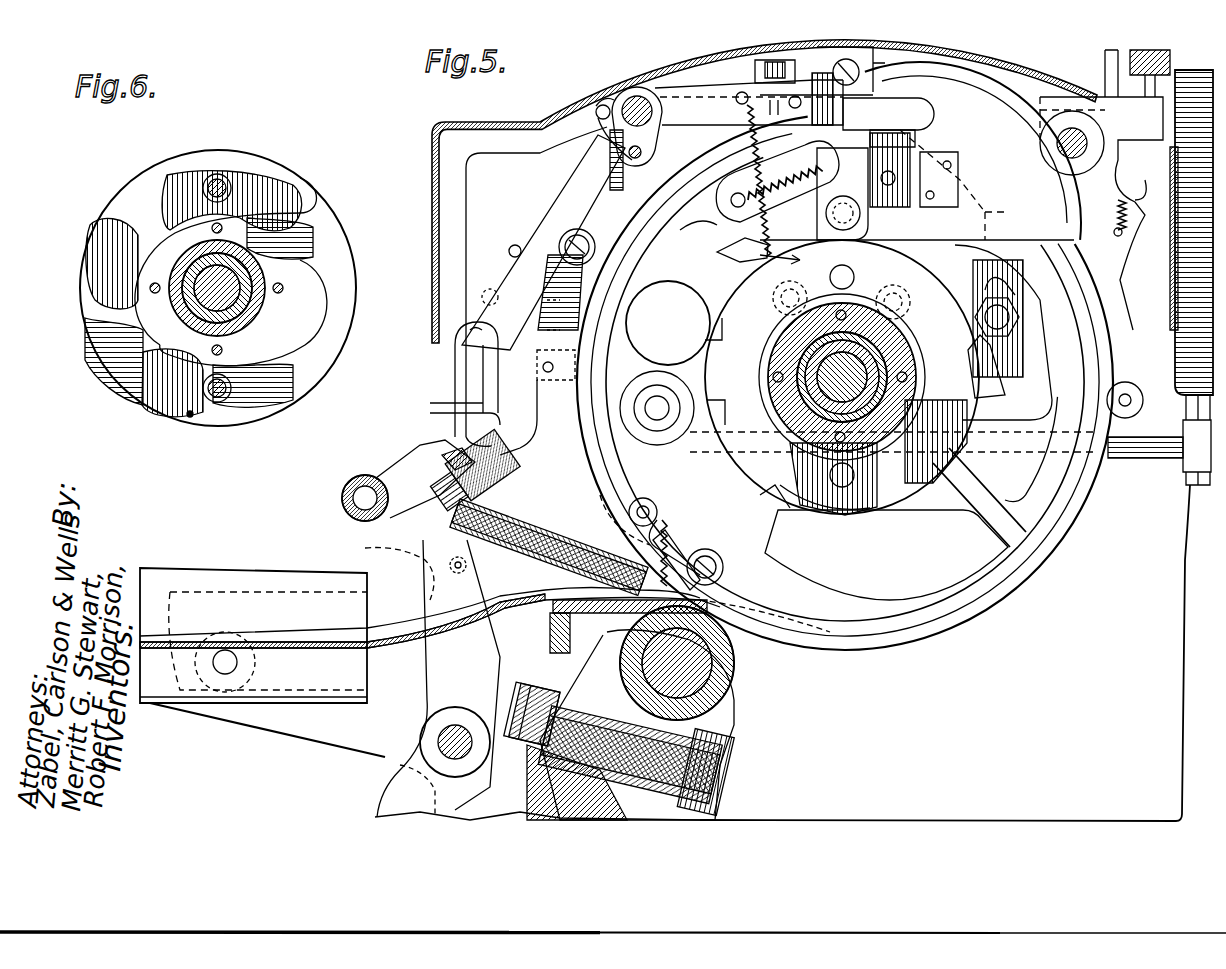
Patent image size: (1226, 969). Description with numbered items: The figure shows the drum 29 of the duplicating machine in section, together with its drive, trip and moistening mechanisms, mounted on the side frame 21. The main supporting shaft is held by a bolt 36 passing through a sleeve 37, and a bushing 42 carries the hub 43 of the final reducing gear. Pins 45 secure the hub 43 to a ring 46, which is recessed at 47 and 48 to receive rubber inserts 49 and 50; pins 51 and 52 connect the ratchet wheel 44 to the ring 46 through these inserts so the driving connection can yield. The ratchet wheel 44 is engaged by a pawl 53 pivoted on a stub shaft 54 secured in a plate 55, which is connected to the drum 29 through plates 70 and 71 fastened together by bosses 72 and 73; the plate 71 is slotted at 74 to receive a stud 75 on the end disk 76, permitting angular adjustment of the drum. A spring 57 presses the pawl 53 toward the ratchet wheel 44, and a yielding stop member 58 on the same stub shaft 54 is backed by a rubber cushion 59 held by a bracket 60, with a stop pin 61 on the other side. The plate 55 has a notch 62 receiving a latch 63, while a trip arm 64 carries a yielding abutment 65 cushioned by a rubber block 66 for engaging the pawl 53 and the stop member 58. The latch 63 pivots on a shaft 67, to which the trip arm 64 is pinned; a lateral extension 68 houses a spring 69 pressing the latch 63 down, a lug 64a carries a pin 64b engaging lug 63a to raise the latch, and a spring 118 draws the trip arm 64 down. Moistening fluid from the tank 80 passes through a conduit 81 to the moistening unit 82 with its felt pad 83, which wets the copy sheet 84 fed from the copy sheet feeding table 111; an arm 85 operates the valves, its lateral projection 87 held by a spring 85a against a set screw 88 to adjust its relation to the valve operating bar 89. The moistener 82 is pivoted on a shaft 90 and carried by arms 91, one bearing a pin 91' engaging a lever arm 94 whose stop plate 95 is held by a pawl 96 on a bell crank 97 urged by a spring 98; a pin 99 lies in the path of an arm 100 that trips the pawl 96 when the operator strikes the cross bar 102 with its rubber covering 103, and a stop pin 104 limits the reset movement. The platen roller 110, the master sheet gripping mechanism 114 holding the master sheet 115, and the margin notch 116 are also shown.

In FIG. 5, the side frame 21 is at (455, 168).
In FIG. 5, the drum 29 is at (987, 612).
In FIG. 6, the bolt 36 is at (182, 300).
In FIG. 5, the bolt 36 is at (772, 370).
In FIG. 6, the sleeve 37 is at (200, 262).
In FIG. 5, the sleeve 37 is at (815, 430).
In FIG. 6, the bushing 42 is at (258, 276).
In FIG. 5, the bushing 42 is at (790, 398).
In FIG. 5, the hub 43 is at (768, 350).
In FIG. 5, the ratchet wheel 44 is at (840, 490).
In FIG. 6, the pins 45 is at (222, 350).
In FIG. 5, the pins 45 is at (774, 381).
In FIG. 6, the ring 46 is at (127, 370).
In FIG. 6, the recess 47 is at (150, 196).
In FIG. 6, the recess 48 is at (190, 418).
In FIG. 6, the rubber insert 49 is at (273, 393).
In FIG. 6, the rubber insert 50 is at (278, 200).
In FIG. 6, the pin 51 is at (233, 388).
In FIG. 5, the pin 51 is at (862, 512).
In FIG. 6, the pin 52 is at (233, 188).
In FIG. 5, the pin 52 is at (853, 277).
In FIG. 5, the pawl 53 is at (720, 250).
In FIG. 5, the stub shaft 54 is at (860, 217).
In FIG. 5, the plate 55 is at (1012, 178).
In FIG. 5, the spring 57 is at (806, 190).
In FIG. 5, the yielding stop member 58 is at (820, 164).
In FIG. 5, the rubber cushion 59 is at (902, 208).
In FIG. 5, the bracket 60 is at (946, 186).
In FIG. 5, the stop pin 61 is at (812, 178).
In FIG. 5, the notch 62 is at (915, 112).
In FIG. 5, the latch 63 is at (893, 113).
In FIG. 5, the lug 63a is at (616, 135).
In FIG. 5, the trip arm 64 is at (668, 82).
In FIG. 5, the lug 64a is at (600, 127).
In FIG. 5, the pin 64b is at (596, 110).
In FIG. 5, the yielding abutment 65 is at (878, 94).
In FIG. 5, the rubber block 66 is at (886, 77).
In FIG. 5, the shaft 67 is at (623, 105).
In FIG. 5, the lateral extension 68 is at (765, 72).
In FIG. 5, the spring 69 is at (770, 60).
In FIG. 5, the plate 70 is at (992, 211).
In FIG. 5, the plate 71 is at (978, 364).
In FIG. 5, the boss 72 is at (900, 515).
In FIG. 5, the boss 73 is at (907, 312).
In FIG. 5, the slot 74 is at (1002, 360).
In FIG. 5, the stud 75 is at (1012, 332).
In FIG. 5, the end disk 76 is at (1013, 520).
In FIG. 5, the tank 80 is at (1177, 293).
In FIG. 5, the conduit 81 is at (1157, 459).
In FIG. 5, the moistening unit 82 is at (450, 512).
In FIG. 5, the felt pad 83 is at (566, 583).
In FIG. 5, the copy sheet 84 is at (425, 598).
In FIG. 5, the arm 85 is at (1120, 274).
In FIG. 5, the spring 85a is at (1120, 228).
In FIG. 5, the lateral projection 87 is at (1146, 140).
In FIG. 5, the set screw 88 is at (1143, 103).
In FIG. 5, the valve operating bar 89 is at (1162, 70).
In FIG. 5, the shaft 90 is at (438, 742).
In FIG. 5, the arm 91 is at (537, 680).
In FIG. 5, the pin 91' is at (378, 566).
In FIG. 5, the lever arm 94 is at (540, 410).
In FIG. 5, the stop plate 95 is at (540, 390).
In FIG. 5, the pawl 96 is at (627, 324).
In FIG. 5, the bell crank 97 is at (470, 397).
In FIG. 5, the spring 98 is at (478, 381).
In FIG. 5, the pin 99 is at (468, 413).
In FIG. 5, the arm 100 is at (610, 185).
In FIG. 5, the cross bar 102 is at (382, 477).
In FIG. 5, the rubber covering 103 is at (343, 494).
In FIG. 5, the stop pin 104 is at (514, 245).
In FIG. 5, the platen roller 110 is at (736, 660).
In FIG. 5, the copy sheet feeding table 111 is at (325, 655).
In FIG. 5, the master sheet gripping mechanism 114 is at (725, 570).
In FIG. 5, the master sheet 115 is at (666, 488).
In FIG. 5, the margin notch 116 is at (765, 622).
In FIG. 5, the spring 118 is at (740, 106).